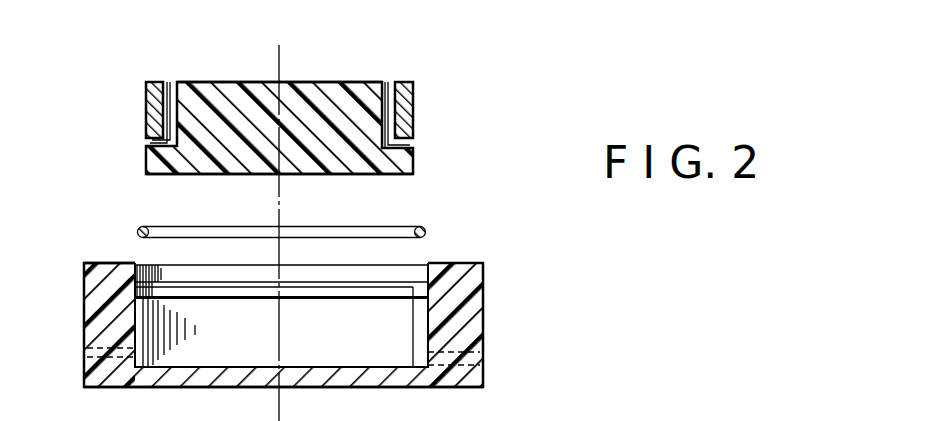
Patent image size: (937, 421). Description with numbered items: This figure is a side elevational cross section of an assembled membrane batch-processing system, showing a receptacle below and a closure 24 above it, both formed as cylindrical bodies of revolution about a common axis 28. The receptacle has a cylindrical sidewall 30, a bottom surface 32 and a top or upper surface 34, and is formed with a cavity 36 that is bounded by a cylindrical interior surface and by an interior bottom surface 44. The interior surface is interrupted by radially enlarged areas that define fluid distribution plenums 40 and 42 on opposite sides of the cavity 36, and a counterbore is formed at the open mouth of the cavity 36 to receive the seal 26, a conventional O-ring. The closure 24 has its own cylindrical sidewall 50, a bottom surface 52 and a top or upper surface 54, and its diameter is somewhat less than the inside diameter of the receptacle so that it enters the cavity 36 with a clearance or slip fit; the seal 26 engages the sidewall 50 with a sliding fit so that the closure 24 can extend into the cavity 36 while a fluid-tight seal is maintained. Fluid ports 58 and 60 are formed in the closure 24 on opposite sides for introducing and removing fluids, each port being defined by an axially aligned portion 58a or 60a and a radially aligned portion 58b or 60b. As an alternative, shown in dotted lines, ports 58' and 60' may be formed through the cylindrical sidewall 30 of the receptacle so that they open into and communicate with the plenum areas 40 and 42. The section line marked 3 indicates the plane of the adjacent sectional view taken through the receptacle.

The closure 24 is at (333, 82).
The seal 26 is at (428, 232).
The axis 28 is at (283, 57).
The cylindrical sidewall 30 is at (84, 270).
The bottom surface 32 is at (345, 388).
The top or upper surface 34 is at (118, 263).
The cavity 36 is at (245, 340).
The fluid distribution plenum 40 is at (143, 320).
The fluid distribution plenum 42 is at (418, 327).
The interior bottom surface 44 is at (297, 367).
The cylindrical sidewall 50 is at (413, 102).
The bottom surface 52 is at (334, 176).
The top or upper surface 54 is at (250, 82).
The fluid port 58 is at (154, 87).
The axially aligned portion 58a is at (170, 112).
The radially aligned portion 58b is at (165, 145).
The port 58' is at (54, 377).
The fluid port 60 is at (420, 92).
The axially aligned portion 60a is at (400, 118).
The radially aligned portion 60b is at (407, 143).
The port 60' is at (508, 376).
The section line 3- 3 is at (45, 352).